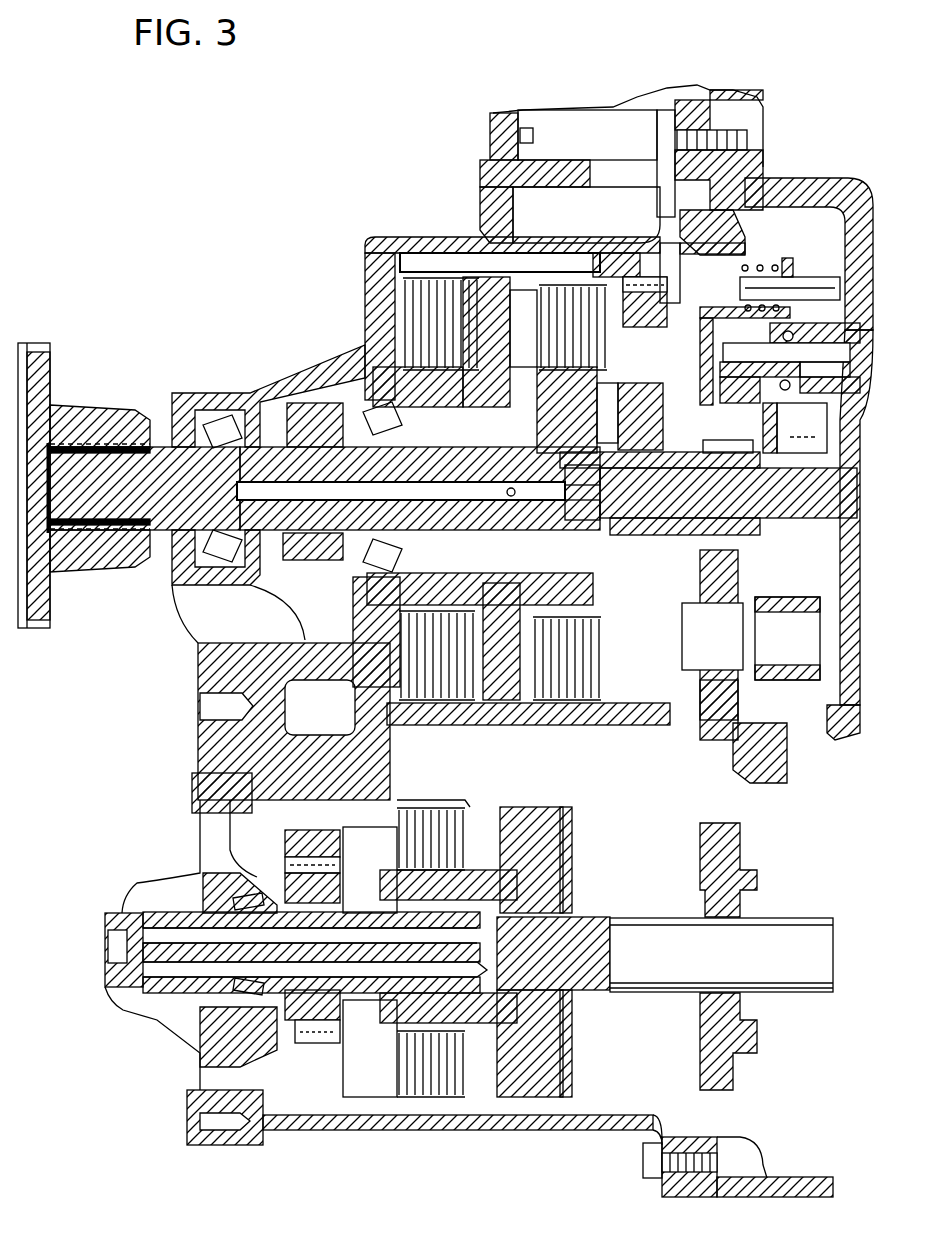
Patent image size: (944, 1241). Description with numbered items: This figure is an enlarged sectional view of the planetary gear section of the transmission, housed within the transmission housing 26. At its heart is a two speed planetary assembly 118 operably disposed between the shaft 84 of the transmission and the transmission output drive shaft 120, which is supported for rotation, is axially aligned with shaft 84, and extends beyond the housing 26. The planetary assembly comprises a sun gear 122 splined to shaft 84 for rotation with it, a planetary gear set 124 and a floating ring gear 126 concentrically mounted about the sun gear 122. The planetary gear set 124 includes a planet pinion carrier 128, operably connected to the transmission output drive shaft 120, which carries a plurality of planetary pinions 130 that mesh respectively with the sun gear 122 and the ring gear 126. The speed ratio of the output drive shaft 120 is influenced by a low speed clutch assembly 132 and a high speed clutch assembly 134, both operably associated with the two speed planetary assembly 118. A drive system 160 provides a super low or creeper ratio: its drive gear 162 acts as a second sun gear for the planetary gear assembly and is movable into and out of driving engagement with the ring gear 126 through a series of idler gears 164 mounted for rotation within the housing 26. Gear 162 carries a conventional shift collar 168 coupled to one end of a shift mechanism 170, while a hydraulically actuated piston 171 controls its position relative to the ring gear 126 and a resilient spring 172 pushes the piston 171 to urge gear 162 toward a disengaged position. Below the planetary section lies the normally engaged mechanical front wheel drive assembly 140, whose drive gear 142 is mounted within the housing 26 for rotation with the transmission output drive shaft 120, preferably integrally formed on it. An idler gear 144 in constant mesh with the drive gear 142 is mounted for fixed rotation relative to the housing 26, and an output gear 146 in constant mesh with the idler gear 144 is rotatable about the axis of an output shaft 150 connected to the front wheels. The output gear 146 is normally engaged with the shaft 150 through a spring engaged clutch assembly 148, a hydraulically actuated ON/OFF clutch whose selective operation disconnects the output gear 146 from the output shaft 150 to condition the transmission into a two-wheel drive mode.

The housing 26 is at (447, 236).
The shaft 84 is at (696, 507).
The two speed planetary assembly 118 is at (730, 222).
The transmission output drive shaft 120 is at (163, 513).
The sun gear 122 is at (643, 547).
The planetary gear set 124 is at (655, 290).
The floating ring gear 126 is at (738, 248).
The planet pinion carrier 128 is at (625, 330).
The planetary pinions 130 is at (658, 240).
The low speed clutch assembly 132 is at (429, 708).
The high speed clutch assembly 134 is at (567, 718).
The front wheel drive assembly 140 is at (262, 855).
The drive gear 142 is at (314, 402).
The idler gear 144 is at (310, 815).
The output gear 146 is at (303, 1020).
The spring engaged clutch assembly 148 is at (365, 1088).
The output shaft 150 is at (650, 965).
The drive system 160 is at (680, 593).
The drive gear 162 is at (723, 442).
The idler gears 164 is at (703, 700).
The shift collar 168 is at (767, 547).
The shift mechanism 170 is at (696, 324).
The hydraulically actuated piston 171 is at (777, 418).
The resilient spring 172 is at (762, 272).